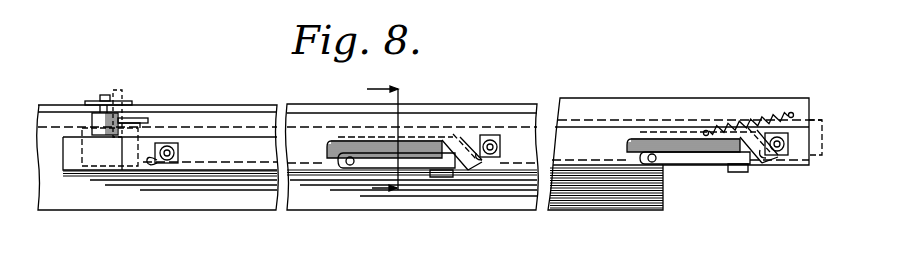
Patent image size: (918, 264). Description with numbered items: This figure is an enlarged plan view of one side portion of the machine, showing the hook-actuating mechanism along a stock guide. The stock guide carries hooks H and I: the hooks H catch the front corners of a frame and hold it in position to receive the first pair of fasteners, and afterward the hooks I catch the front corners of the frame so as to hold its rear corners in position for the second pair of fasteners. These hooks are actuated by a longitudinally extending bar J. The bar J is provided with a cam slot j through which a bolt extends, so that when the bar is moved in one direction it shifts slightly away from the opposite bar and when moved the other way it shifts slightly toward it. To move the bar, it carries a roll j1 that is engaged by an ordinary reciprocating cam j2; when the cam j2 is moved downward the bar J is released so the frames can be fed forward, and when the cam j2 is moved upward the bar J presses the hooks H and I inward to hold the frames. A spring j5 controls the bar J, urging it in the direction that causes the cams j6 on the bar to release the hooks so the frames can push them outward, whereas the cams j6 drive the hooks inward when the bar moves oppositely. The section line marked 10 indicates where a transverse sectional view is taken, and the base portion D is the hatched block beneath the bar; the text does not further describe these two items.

The roll j1 is at (97, 122).
The reciprocating cam j2 is at (133, 119).
The cam slot j is at (152, 164).
The section line 10- 10 is at (390, 138).
The cam j6 is at (442, 148).
The hook H is at (438, 177).
The longitudinally extending bar J is at (587, 143).
The spring j5 is at (750, 121).
The hook I is at (737, 172).
The base block D is at (603, 186).